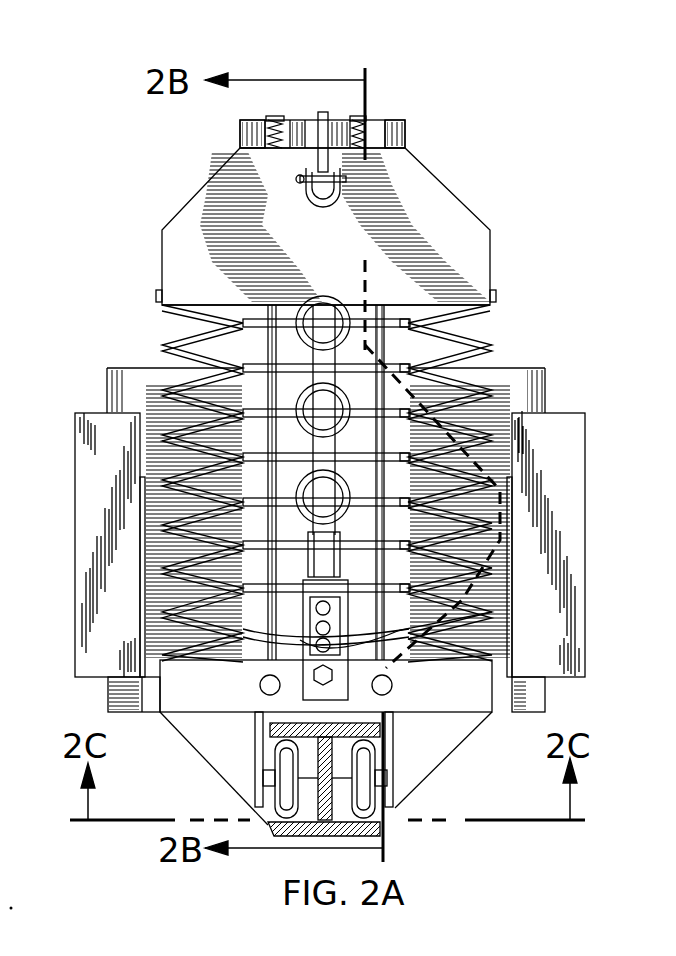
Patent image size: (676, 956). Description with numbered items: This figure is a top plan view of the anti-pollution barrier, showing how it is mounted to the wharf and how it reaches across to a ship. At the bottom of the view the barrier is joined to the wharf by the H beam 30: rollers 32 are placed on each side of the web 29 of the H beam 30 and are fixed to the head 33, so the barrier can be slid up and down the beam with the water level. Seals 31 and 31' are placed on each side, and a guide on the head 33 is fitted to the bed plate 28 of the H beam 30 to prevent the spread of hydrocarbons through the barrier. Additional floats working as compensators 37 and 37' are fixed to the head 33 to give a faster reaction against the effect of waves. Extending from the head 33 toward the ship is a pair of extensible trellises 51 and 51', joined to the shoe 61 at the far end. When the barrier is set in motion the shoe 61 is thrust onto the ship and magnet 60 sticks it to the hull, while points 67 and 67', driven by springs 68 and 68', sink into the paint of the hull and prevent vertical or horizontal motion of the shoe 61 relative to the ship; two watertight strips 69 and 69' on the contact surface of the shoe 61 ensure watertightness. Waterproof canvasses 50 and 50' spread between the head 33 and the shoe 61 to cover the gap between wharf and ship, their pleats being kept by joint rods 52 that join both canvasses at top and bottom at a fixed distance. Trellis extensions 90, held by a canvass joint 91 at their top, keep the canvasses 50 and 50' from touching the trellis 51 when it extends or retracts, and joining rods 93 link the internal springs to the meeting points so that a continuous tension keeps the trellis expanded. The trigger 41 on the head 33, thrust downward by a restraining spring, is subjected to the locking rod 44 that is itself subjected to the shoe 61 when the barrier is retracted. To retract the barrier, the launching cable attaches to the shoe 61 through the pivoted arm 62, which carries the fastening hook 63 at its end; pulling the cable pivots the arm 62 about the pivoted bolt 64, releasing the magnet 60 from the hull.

The bed plate 28 is at (252, 735).
The web 29 is at (385, 845).
The H beam 30 is at (266, 812).
The seal 31 is at (429, 779).
The seal 31' is at (234, 773).
The rollers 32 is at (400, 766).
The head 33 is at (445, 735).
The compensator 37 is at (521, 522).
The compensator 37' is at (141, 522).
The trigger 41 is at (132, 703).
The locking rod 44 is at (256, 360).
The waterproof canvass 50 is at (479, 429).
The waterproof canvass 50' is at (252, 476).
The extensible trellis 51 is at (483, 446).
The extensible trellis 51' is at (169, 467).
The joint rods 52 is at (270, 302).
The magnet 60 is at (346, 125).
The shoe 61 is at (452, 192).
The pivoted arm 62 is at (335, 125).
The fastening hook 63 is at (342, 210).
The pivoted bolt 64 is at (308, 122).
The point 67 is at (382, 97).
The point 67' is at (255, 87).
The spring 68 is at (389, 102).
The spring 68' is at (231, 114).
The watertight strip 69 is at (437, 132).
The watertight strip 69' is at (206, 141).
The trellis extension 90 is at (492, 612).
The canvass joint 91 is at (410, 407).
The joining rods 93 is at (520, 703).